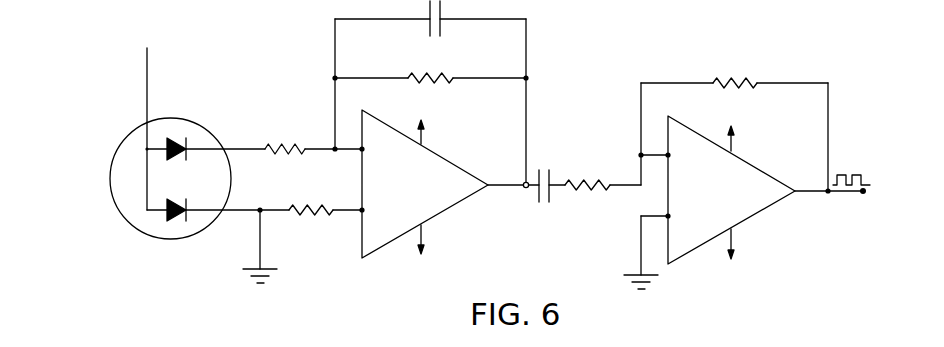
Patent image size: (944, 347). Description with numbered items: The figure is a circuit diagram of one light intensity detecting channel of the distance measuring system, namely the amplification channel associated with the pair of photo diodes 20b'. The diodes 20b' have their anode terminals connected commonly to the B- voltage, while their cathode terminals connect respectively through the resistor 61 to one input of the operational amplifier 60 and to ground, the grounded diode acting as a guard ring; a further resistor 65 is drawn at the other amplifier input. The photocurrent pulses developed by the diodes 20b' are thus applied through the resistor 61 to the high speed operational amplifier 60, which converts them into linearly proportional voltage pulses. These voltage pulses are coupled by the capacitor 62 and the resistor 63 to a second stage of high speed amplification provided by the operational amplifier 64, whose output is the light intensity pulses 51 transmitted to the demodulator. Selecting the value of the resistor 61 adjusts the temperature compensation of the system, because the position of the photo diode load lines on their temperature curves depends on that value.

The pair of diodes 20b' is at (170, 130).
The resistor 61 is at (277, 146).
The input resistor 65 is at (308, 206).
The operational amplifier 60 is at (450, 163).
The capacitor 62 is at (548, 205).
The resistor 63 is at (585, 179).
The operational amplifier 64 is at (765, 172).
The light intensity pulses 51 is at (858, 174).